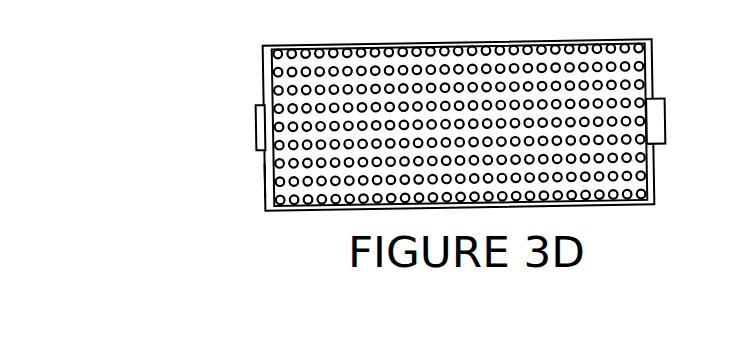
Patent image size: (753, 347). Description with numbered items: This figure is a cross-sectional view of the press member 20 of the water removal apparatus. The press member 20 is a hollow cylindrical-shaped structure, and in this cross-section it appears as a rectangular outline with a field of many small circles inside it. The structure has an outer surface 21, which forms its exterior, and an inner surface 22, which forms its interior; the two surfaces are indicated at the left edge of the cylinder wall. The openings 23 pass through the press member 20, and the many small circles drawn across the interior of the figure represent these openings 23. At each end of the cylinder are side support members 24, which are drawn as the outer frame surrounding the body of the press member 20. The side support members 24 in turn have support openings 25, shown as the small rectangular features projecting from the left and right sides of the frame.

The press member 20 is at (212, 80).
The outer surface 21 is at (297, 214).
The inner surface 22 is at (268, 172).
The openings 23 is at (268, 185).
The side support members 24 is at (262, 60).
The support openings 25 is at (256, 128).